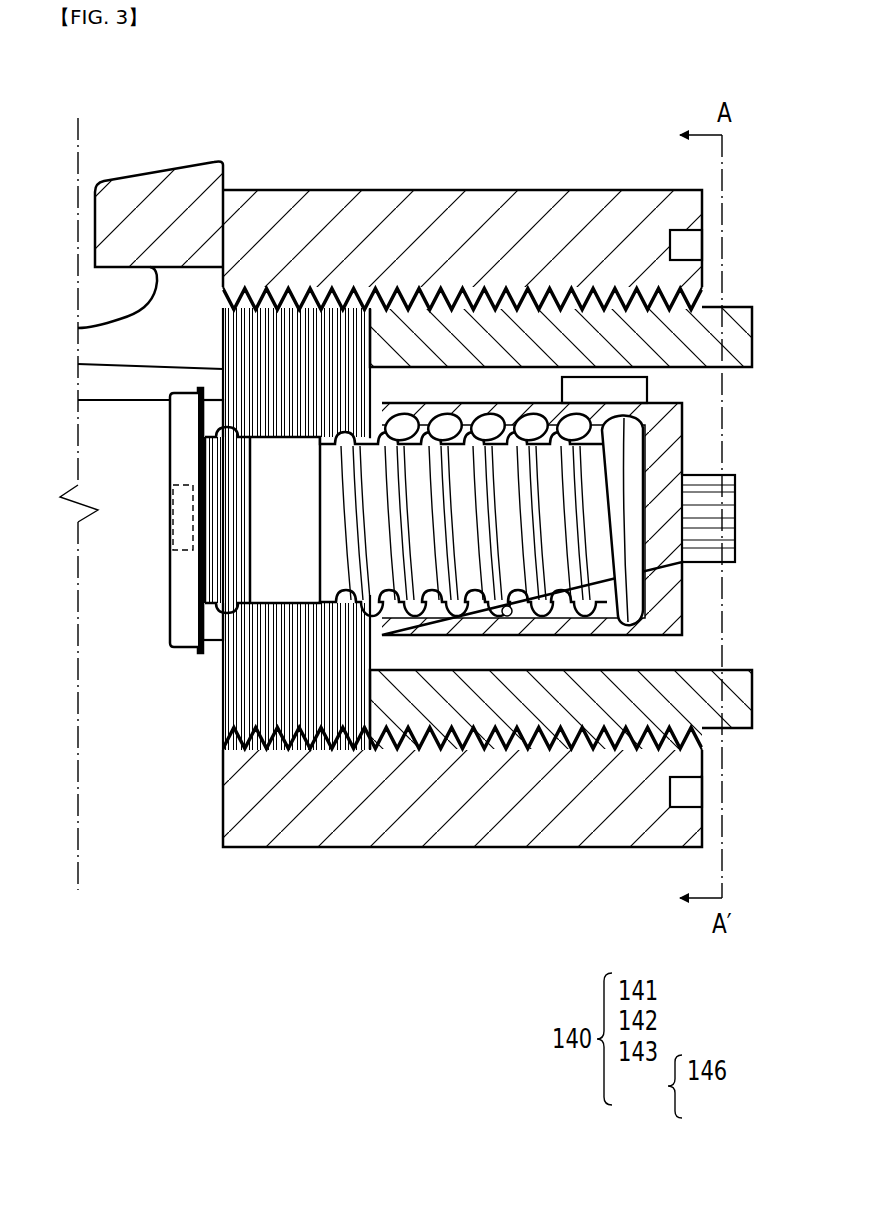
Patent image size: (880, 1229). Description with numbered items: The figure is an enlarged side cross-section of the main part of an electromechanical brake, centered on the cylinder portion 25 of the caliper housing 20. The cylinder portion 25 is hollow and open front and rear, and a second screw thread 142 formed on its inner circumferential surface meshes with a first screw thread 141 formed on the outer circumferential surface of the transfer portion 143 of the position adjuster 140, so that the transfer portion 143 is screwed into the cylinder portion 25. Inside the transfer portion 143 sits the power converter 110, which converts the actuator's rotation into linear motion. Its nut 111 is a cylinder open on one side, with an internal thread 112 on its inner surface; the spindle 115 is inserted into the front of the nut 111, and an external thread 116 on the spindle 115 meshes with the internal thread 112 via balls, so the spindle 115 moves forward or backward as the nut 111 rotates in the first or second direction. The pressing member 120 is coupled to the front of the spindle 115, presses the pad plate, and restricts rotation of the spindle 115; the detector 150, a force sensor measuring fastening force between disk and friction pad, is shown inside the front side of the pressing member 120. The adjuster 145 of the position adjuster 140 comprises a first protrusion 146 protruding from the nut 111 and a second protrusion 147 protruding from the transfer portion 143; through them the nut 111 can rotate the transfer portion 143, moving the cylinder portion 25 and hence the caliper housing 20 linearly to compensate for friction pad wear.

The caliper housing 20 is at (151, 160).
The cylinder portion 25 is at (268, 205).
The power converter 110 is at (423, 675).
The nut 111 is at (433, 622).
The internal thread 112 is at (506, 616).
The spindle 115 is at (298, 577).
The external thread 116 is at (577, 633).
The pressing member 120 is at (180, 614).
The position adjuster 140 is at (510, 284).
The first screw thread 141 is at (380, 290).
The second screw thread 142 is at (290, 308).
The transfer portion 143 is at (463, 317).
The adjuster 145 is at (648, 738).
The first protrusion 146 is at (637, 390).
The second protrusion 147 is at (708, 796).
The detector 150 is at (180, 522).